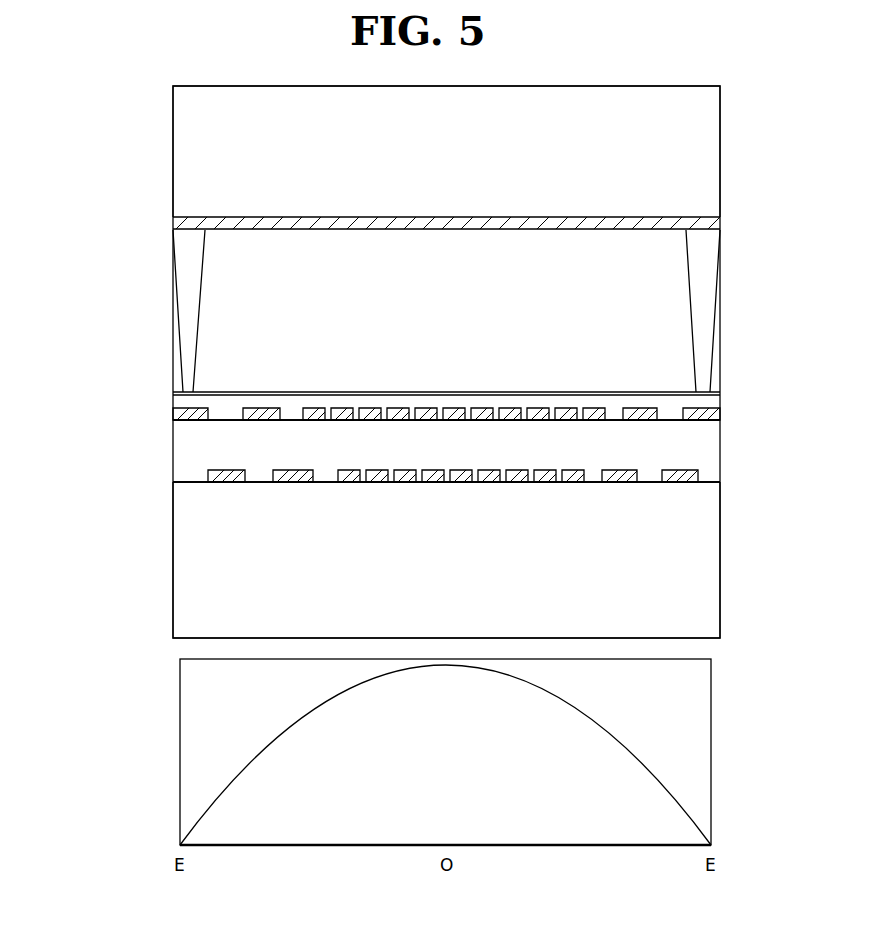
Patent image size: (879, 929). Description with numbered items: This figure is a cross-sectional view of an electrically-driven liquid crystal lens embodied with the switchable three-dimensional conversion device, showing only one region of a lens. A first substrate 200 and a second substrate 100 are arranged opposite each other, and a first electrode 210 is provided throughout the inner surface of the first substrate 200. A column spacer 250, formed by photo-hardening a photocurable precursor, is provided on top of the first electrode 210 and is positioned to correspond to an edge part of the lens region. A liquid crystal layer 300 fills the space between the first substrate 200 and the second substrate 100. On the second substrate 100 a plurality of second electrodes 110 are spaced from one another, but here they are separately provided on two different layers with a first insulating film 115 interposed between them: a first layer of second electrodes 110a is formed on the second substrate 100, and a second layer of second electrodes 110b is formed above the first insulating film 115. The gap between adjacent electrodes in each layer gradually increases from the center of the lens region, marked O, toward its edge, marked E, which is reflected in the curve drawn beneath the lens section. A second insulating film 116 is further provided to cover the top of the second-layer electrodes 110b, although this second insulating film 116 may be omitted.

The second substrate 100 is at (712, 557).
The second electrodes 110 is at (68, 432).
The first layer of second electrodes 110a is at (208, 473).
The second layer of second electrodes 110b is at (172, 412).
The first insulating film 115 is at (712, 443).
The second insulating film 116 is at (714, 398).
The first substrate 200 is at (712, 172).
The first electrode 210 is at (712, 223).
The column spacer 250 is at (193, 312).
The liquid crystal layer 300 is at (680, 312).